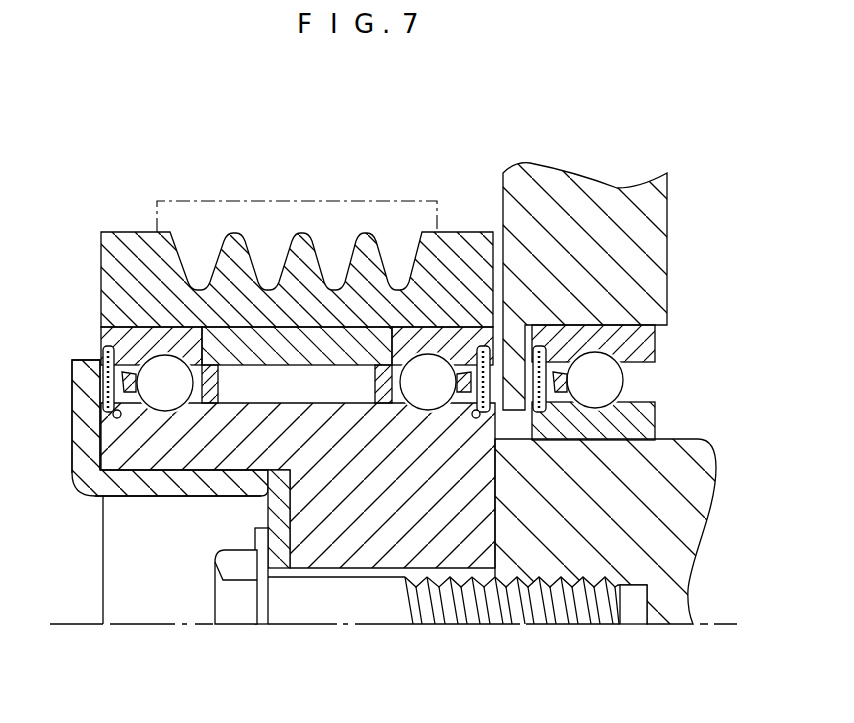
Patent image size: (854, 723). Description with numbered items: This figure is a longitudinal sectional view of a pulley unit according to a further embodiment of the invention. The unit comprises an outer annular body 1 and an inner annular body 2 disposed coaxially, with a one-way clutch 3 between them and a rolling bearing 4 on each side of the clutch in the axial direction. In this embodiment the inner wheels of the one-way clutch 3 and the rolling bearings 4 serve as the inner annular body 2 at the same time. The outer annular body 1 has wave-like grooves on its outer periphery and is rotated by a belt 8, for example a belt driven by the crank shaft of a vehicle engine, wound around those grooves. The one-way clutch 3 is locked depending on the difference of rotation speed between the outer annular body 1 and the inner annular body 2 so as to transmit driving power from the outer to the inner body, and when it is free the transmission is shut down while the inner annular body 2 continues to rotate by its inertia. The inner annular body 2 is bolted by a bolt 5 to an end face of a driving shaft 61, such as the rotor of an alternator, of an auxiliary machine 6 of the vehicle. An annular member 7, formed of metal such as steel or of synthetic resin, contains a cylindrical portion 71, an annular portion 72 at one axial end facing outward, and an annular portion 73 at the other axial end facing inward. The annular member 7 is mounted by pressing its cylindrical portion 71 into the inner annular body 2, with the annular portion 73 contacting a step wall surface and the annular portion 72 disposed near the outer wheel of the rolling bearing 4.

The outer annular body 1 is at (105, 268).
The inner annular body 2 is at (110, 437).
The one-way clutch 3 is at (273, 325).
The rolling bearing 4 is at (138, 325).
The bolt 5 is at (236, 615).
The auxiliary machine 6 is at (629, 186).
The driving shaft 61 is at (702, 497).
The annular member 7 is at (86, 496).
The cylindrical portion 71 is at (150, 487).
The annular portion 72 is at (80, 383).
The annular portion 73 is at (277, 518).
The belt 8 is at (397, 201).